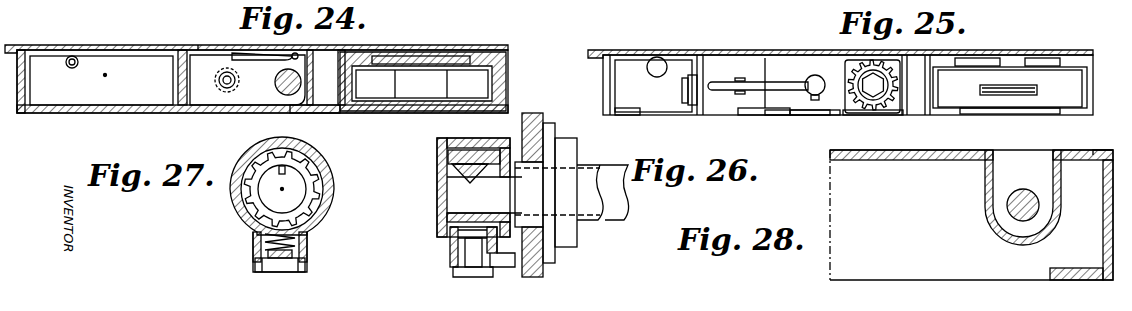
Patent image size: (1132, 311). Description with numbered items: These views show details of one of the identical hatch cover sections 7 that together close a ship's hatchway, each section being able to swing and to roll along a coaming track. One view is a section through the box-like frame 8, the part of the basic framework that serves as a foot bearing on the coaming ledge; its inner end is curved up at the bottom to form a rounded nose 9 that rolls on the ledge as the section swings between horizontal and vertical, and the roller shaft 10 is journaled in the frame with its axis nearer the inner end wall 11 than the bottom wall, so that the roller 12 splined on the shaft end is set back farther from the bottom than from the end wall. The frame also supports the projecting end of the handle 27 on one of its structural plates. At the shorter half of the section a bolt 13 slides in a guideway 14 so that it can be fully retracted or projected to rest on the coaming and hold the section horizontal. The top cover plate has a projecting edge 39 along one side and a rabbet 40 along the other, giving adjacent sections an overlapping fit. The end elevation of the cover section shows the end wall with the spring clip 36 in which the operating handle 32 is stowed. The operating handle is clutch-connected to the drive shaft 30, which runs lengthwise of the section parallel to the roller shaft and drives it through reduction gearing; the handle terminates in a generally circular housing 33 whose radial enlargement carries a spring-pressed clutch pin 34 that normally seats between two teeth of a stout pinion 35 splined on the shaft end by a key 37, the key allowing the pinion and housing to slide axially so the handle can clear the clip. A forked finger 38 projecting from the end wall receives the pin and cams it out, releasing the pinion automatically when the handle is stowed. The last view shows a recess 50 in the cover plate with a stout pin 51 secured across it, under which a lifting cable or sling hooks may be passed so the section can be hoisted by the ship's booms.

In FIG. 24, the section 7 is at (507, 92).
In FIG. 25, the section 7 is at (620, 90).
In FIG. 26, the section 7 is at (533, 113).
In FIG. 28, the section 7 is at (891, 216).
In FIG. 24, the frame 8 is at (208, 113).
In FIG. 25, the frame 8 is at (815, 115).
In FIG. 24, the rounded nose 9 is at (300, 113).
In FIG. 25, the rounded nose 9 is at (880, 115).
In FIG. 24, the shaft 10 is at (274, 84).
In FIG. 24, the inner end wall 11 is at (261, 77).
In FIG. 25, the inner end wall 11 is at (908, 60).
In FIG. 25, the roller 12 is at (866, 60).
In FIG. 25, the bolt 13 is at (1043, 80).
In FIG. 25, the guideway 14 is at (1090, 66).
In FIG. 24, the handle 27 is at (200, 48).
In FIG. 26, the handle 27 is at (462, 130).
In FIG. 27, the drive shaft 30 is at (272, 197).
In FIG. 26, the drive shaft 30 is at (598, 167).
In FIG. 25, the operating handle 32 is at (756, 82).
In FIG. 25, the housing 33 is at (812, 76).
In FIG. 27, the housing 33 is at (323, 183).
In FIG. 26, the housing 33 is at (447, 192).
In FIG. 27, the clutch pin 34 is at (290, 267).
In FIG. 26, the clutch pin 34 is at (455, 255).
In FIG. 27, the pinion 35 is at (307, 197).
In FIG. 25, the spring clip 36 is at (738, 78).
In FIG. 27, the key 37 is at (258, 148).
In FIG. 26, the key 37 is at (472, 170).
In FIG. 26, the forked finger 38 is at (503, 263).
In FIG. 24, the projecting edge 39 is at (12, 46).
In FIG. 25, the projecting edge 39 is at (605, 50).
In FIG. 24, the rabbet 40 is at (500, 56).
In FIG. 28, the rabbet 40 is at (1113, 152).
In FIG. 28, the recess 50 is at (988, 222).
In FIG. 28, the pin 51 is at (1022, 200).